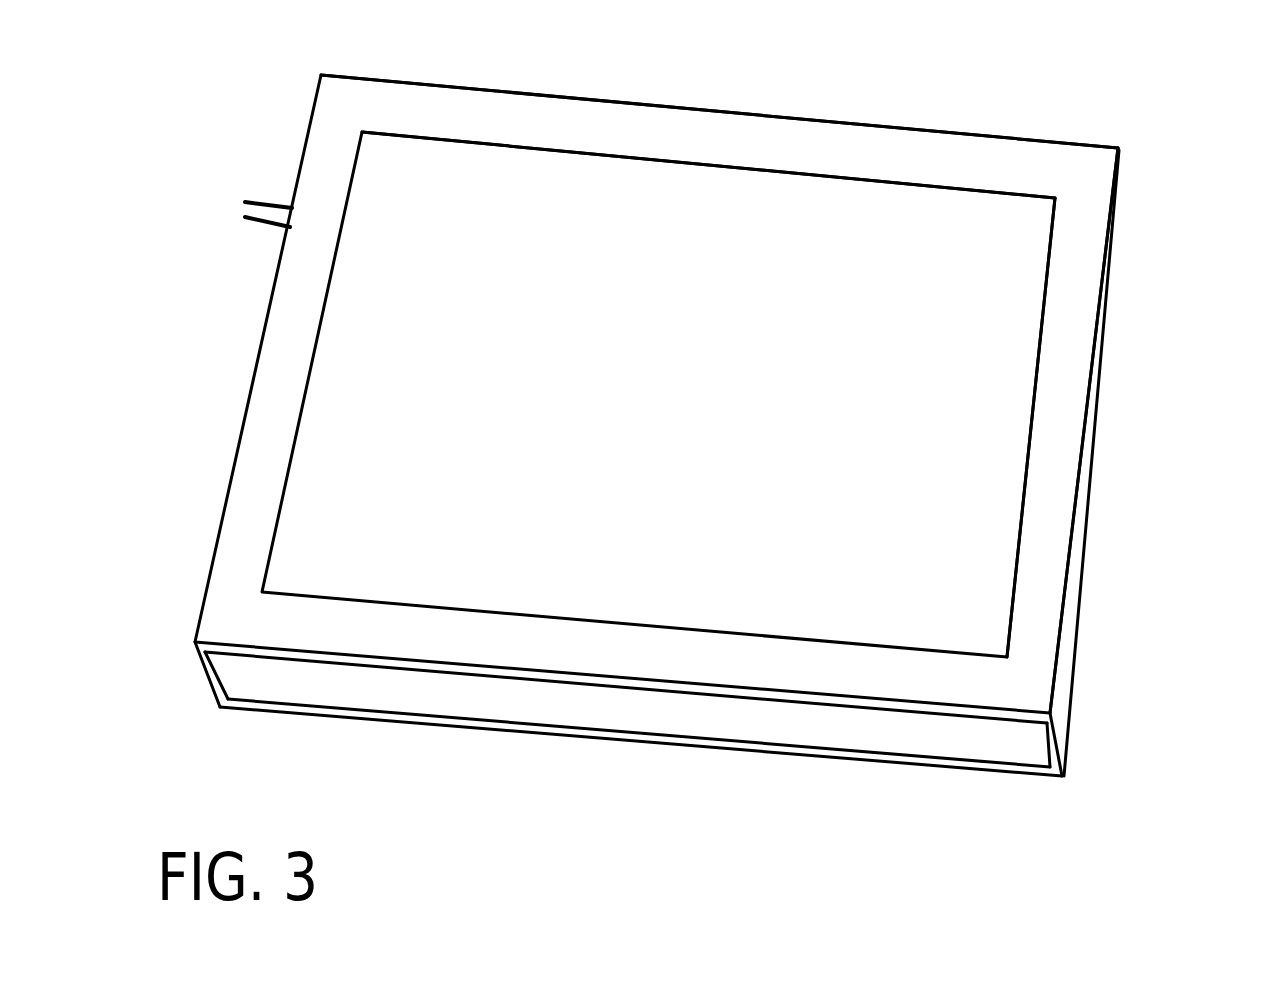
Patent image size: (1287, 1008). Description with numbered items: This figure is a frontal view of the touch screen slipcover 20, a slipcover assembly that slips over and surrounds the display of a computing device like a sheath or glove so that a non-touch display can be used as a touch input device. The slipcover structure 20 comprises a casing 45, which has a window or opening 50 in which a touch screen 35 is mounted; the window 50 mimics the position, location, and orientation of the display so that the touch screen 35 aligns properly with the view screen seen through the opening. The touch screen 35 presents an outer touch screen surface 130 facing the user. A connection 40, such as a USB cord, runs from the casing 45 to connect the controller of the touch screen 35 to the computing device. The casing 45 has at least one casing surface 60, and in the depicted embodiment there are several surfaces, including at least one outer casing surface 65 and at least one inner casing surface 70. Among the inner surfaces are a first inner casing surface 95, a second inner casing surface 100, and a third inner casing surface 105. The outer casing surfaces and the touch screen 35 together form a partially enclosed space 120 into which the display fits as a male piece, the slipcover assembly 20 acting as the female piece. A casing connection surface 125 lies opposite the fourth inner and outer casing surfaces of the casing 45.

The touch screen slipcover 20 is at (1123, 144).
The touch screen 35 is at (1000, 360).
The connection 40 is at (258, 200).
The casing 45 is at (818, 133).
The window 50 is at (1025, 287).
The casing surface 60 is at (1066, 457).
The outer casing surface 65 is at (1045, 607).
The inner casing surface 70 is at (990, 748).
The first inner casing surface 95 is at (873, 715).
The second inner casing surface 100 is at (775, 727).
The third inner casing surface 105 is at (1047, 743).
The partially enclosed space 120 is at (220, 708).
The casing connection surface 125 is at (380, 718).
The outer touch screen surface 130 is at (937, 210).